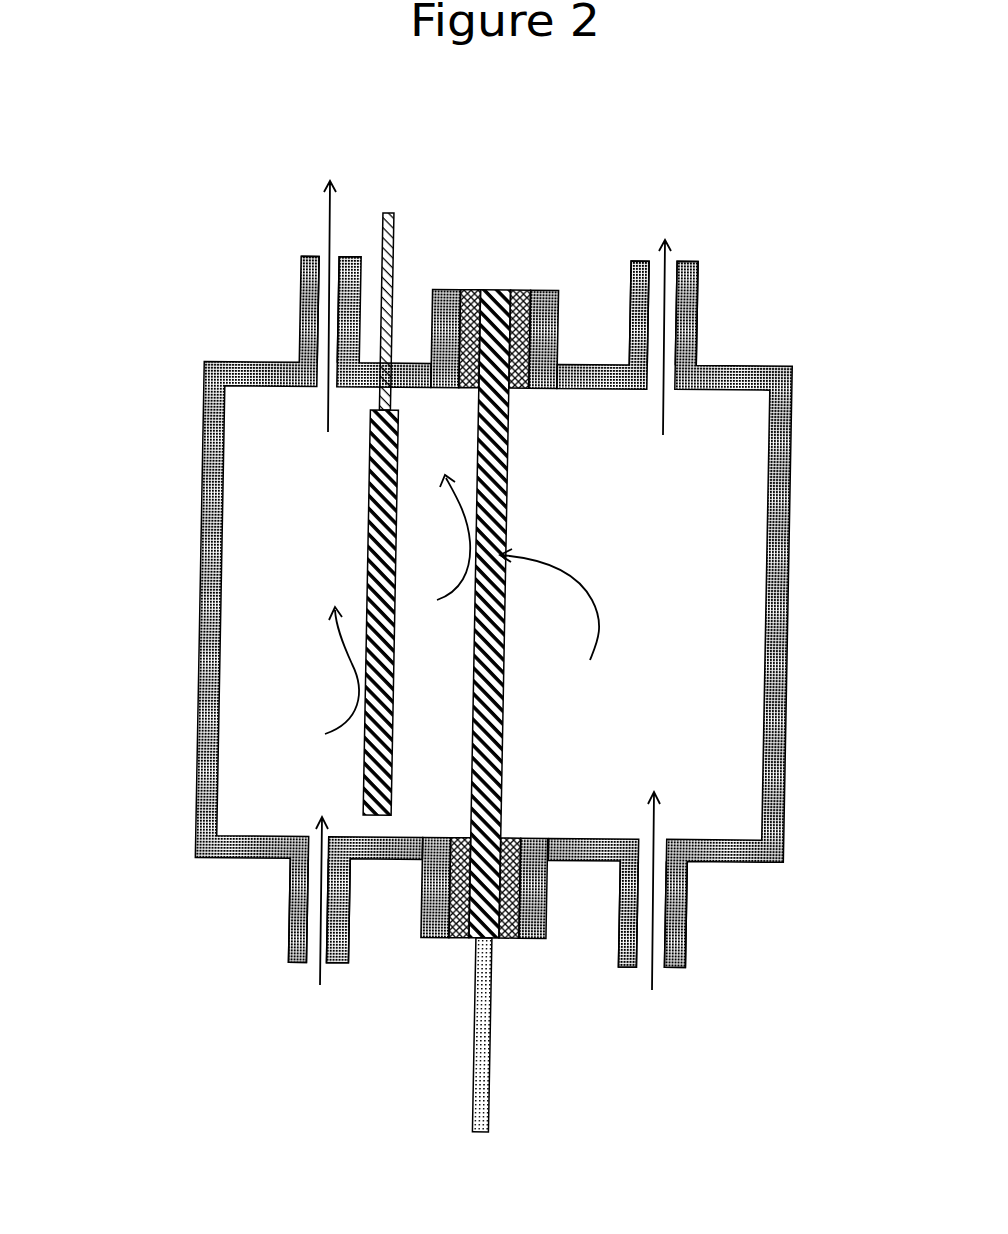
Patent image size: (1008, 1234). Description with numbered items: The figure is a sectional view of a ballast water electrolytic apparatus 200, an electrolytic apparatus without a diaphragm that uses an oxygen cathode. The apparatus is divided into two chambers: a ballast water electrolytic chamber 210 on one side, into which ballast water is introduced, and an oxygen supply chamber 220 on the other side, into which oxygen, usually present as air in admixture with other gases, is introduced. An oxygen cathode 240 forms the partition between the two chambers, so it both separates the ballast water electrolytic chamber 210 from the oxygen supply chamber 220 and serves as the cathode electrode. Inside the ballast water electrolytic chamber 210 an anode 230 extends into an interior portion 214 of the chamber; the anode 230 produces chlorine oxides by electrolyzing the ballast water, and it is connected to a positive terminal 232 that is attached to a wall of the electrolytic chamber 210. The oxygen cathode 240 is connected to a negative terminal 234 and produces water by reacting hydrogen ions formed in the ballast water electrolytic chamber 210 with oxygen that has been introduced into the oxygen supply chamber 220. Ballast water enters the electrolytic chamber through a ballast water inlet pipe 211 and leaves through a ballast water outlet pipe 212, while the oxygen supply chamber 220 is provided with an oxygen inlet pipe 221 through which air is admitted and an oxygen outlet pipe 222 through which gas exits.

The ballast water electrolytic apparatus 200 is at (152, 269).
The ballast water electrolytic chamber 210 is at (202, 462).
The ballast water inlet pipe 211 is at (288, 912).
The ballast water outlet pipe 212 is at (300, 300).
The interior portion 214 is at (258, 616).
The oxygen supply chamber 220 is at (792, 450).
The oxygen inlet pipe 221 is at (690, 910).
The oxygen outlet pipe 222 is at (698, 316).
The anode 230 is at (370, 505).
The positive terminal 232 is at (393, 255).
The negative terminal 234 is at (491, 1071).
The oxygen cathode 240 is at (507, 462).